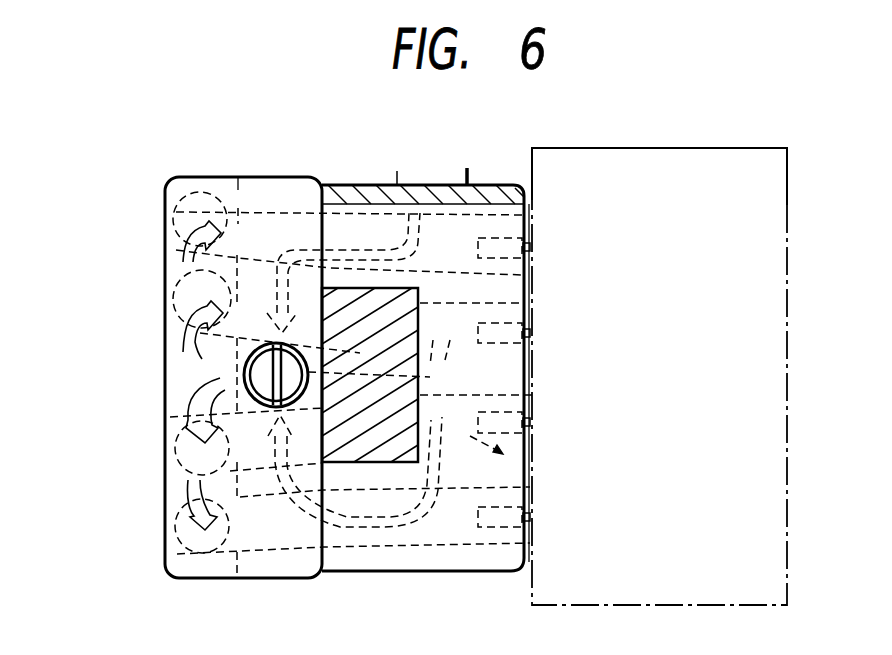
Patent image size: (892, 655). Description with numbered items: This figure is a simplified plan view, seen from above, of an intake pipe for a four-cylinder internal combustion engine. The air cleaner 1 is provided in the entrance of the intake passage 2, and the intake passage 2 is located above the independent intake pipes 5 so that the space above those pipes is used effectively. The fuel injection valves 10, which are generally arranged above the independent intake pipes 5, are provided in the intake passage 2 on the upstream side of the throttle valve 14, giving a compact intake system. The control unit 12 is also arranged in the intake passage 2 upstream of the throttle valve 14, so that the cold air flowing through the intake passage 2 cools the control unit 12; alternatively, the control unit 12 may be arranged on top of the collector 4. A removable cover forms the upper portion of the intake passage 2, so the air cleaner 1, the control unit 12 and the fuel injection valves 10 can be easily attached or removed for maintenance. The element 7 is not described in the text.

The air cleaner 1 is at (352, 187).
The intake passage 2 is at (441, 287).
The collector 4 is at (289, 177).
The independent intake pipes 5 is at (322, 290).
The mating connector 7 is at (768, 308).
The fuel injection valves 10 is at (522, 326).
The control unit 12 is at (367, 447).
The throttle valve 14 is at (245, 374).